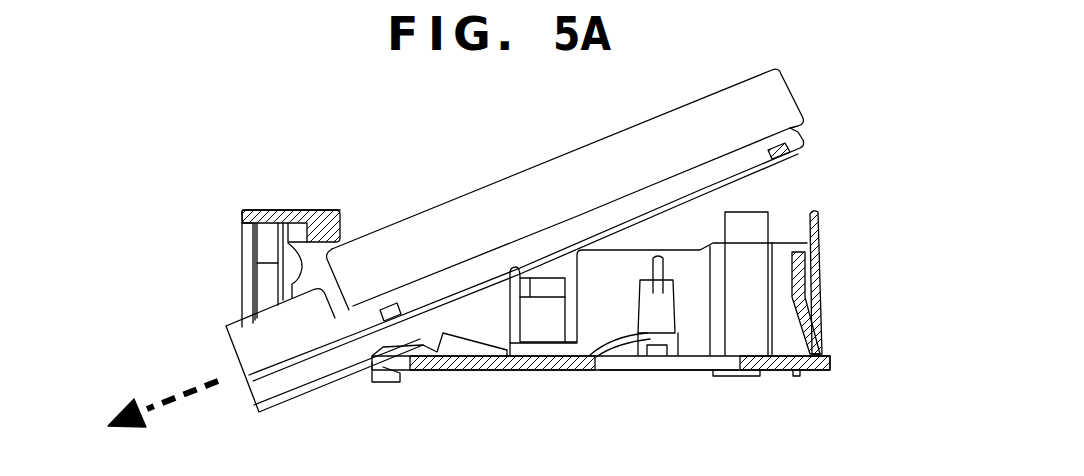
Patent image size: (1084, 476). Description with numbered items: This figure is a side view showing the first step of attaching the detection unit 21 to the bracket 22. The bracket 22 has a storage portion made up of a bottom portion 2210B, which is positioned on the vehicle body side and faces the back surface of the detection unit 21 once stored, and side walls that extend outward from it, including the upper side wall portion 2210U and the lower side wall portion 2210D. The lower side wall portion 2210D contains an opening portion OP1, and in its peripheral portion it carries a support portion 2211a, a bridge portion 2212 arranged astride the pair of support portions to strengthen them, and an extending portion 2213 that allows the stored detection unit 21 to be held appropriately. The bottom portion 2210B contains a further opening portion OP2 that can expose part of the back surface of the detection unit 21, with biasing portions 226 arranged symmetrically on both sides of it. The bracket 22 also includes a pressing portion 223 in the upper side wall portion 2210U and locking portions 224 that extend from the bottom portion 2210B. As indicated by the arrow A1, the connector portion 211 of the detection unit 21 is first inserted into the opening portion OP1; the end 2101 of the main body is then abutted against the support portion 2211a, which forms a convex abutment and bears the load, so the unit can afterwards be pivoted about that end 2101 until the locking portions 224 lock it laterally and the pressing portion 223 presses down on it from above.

The detection unit 21 is at (767, 72).
The connector portion 211 is at (232, 335).
The end of the main body portion 2101 is at (358, 268).
The arrow A1 is at (138, 416).
The lower side wall portion 2210D is at (245, 235).
The upper side wall portion 2210U is at (818, 216).
The bottom portion 2210B is at (543, 371).
The support portion 2211a is at (287, 247).
The bridge portion 2212 is at (256, 212).
The extending portion 2213 is at (333, 210).
The bracket 22 is at (833, 358).
The pressing portion 223 is at (797, 272).
The locking portion 224 is at (752, 224).
The biasing portion 226 is at (628, 352).
The opening portion OP1 is at (248, 277).
The opening portion OP2 is at (673, 370).